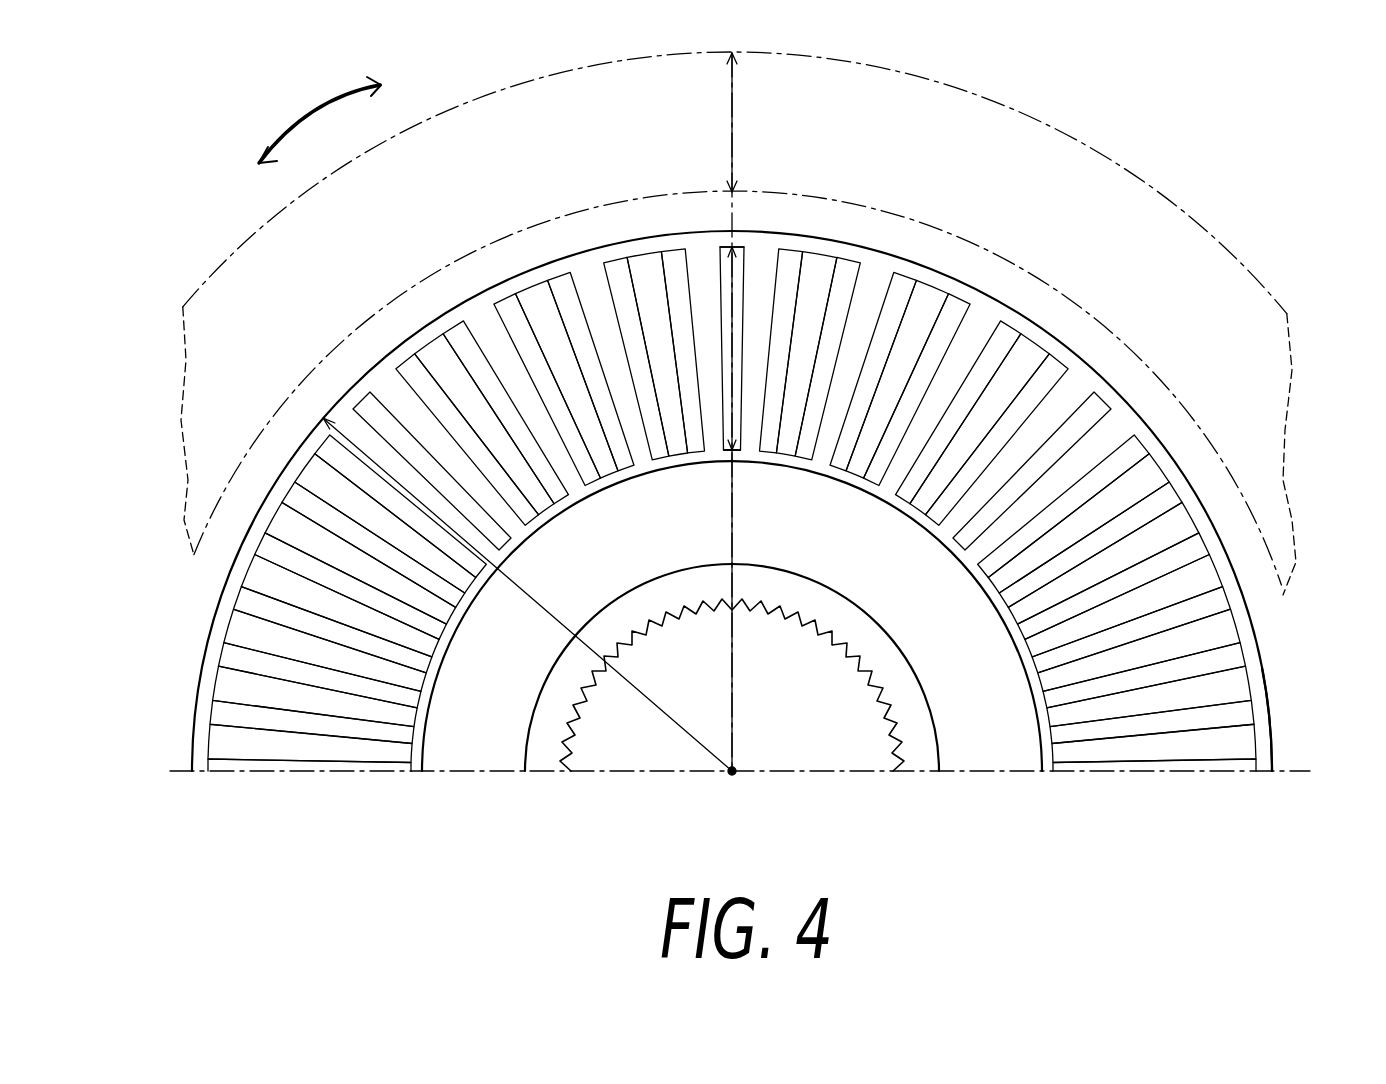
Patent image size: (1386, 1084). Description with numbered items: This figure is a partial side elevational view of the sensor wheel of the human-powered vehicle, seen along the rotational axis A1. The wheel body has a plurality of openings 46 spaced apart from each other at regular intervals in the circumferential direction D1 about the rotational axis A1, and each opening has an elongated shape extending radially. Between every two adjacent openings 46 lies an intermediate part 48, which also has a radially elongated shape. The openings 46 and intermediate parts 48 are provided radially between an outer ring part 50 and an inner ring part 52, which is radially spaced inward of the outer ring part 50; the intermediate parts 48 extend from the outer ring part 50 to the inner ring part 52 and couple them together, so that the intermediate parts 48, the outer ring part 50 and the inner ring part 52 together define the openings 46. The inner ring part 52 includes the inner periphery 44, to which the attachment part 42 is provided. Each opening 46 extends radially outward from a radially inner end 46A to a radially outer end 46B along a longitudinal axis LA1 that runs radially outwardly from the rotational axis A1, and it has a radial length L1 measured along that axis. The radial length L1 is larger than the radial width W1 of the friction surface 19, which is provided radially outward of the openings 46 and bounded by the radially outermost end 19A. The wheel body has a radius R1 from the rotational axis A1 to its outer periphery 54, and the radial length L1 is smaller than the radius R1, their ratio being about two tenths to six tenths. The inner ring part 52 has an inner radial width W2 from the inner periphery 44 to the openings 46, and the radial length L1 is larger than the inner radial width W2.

The friction surface 19 is at (1073, 135).
The radially outermost end 19A is at (1020, 108).
The attachment part 42 is at (845, 668).
The inner periphery 44 is at (813, 620).
The openings 46 is at (750, 295).
The radially inner end 46A is at (741, 453).
The radially outer end 46B is at (738, 246).
The intermediate parts 48 is at (646, 263).
The outer ring part 50 is at (1265, 771).
The inner ring part 52 is at (988, 752).
The outer periphery 54 is at (1273, 747).
The circumferential direction D1 is at (315, 118).
The radial width W1 is at (740, 105).
The inner radial width W2 is at (723, 453).
The radial length L1 is at (716, 260).
The radius R1 is at (636, 690).
The longitudinal axis LA1 is at (730, 703).
The rotational axis A1 is at (735, 778).